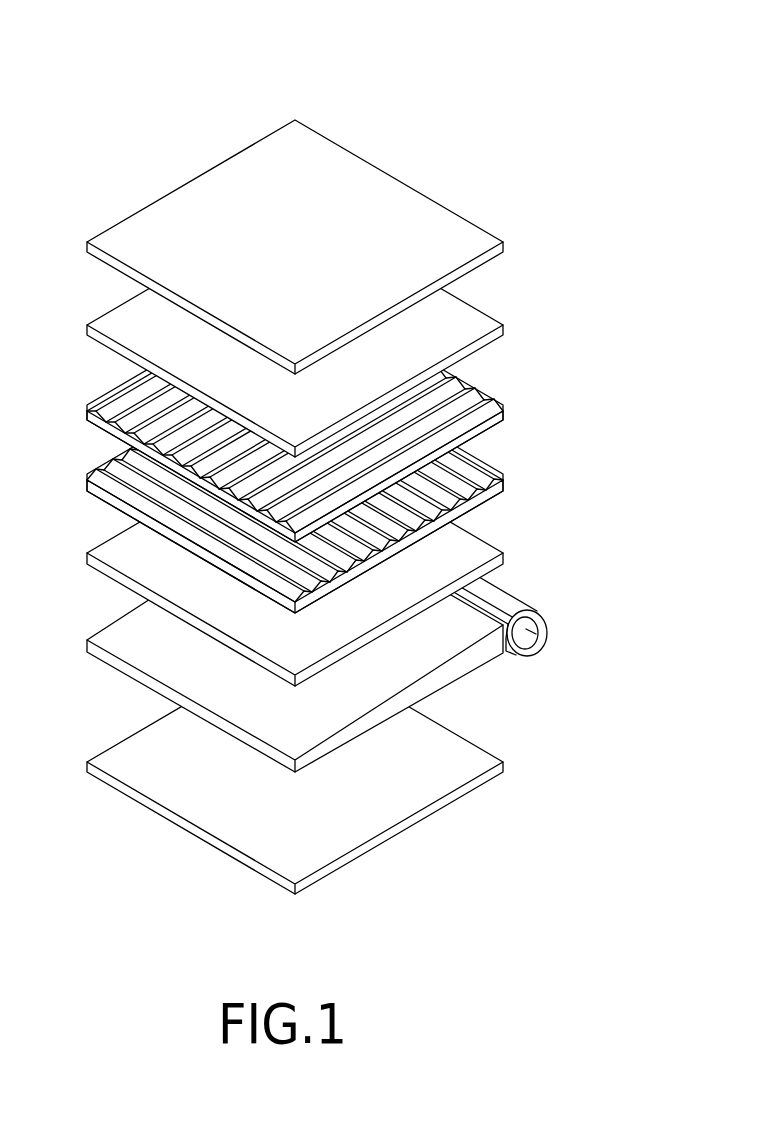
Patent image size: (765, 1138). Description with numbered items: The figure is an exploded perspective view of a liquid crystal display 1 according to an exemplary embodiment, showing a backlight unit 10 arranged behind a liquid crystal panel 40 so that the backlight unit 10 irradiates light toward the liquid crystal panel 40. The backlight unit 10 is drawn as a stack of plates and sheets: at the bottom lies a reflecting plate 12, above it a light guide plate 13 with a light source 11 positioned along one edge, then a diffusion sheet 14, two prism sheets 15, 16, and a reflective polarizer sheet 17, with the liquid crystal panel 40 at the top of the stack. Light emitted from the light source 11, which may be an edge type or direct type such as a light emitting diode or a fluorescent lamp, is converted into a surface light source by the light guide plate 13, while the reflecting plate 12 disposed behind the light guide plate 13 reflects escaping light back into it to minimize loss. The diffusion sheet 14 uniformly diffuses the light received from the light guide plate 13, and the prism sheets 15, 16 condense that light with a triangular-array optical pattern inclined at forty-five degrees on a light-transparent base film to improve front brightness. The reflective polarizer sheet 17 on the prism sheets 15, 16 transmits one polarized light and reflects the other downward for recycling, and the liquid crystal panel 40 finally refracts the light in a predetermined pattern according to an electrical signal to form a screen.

The liquid crystal display 1 is at (290, 53).
The backlight unit 10 is at (373, 548).
The light source 11 is at (531, 631).
The reflecting plate 12 is at (447, 802).
The light guide plate 13 is at (472, 660).
The diffusion sheet 14 is at (503, 560).
The prism sheet 15 is at (503, 490).
The prism sheet 16 is at (503, 418).
The reflective polarizer sheet 17 is at (338, 330).
The liquid crystal panel 40 is at (503, 243).